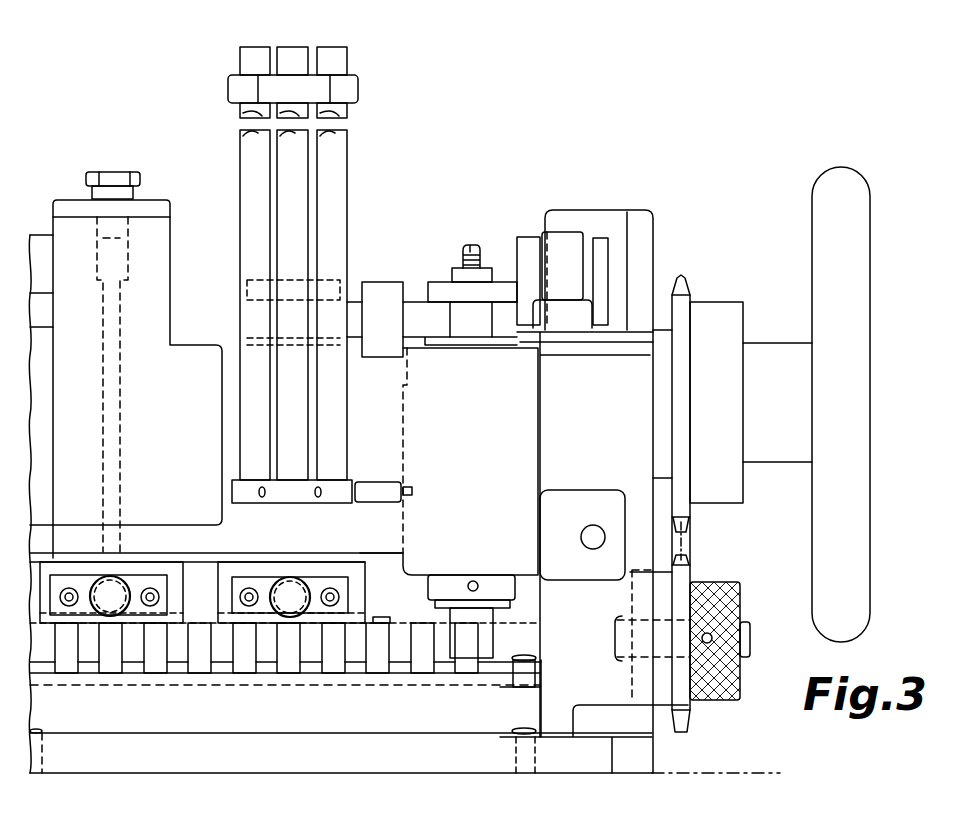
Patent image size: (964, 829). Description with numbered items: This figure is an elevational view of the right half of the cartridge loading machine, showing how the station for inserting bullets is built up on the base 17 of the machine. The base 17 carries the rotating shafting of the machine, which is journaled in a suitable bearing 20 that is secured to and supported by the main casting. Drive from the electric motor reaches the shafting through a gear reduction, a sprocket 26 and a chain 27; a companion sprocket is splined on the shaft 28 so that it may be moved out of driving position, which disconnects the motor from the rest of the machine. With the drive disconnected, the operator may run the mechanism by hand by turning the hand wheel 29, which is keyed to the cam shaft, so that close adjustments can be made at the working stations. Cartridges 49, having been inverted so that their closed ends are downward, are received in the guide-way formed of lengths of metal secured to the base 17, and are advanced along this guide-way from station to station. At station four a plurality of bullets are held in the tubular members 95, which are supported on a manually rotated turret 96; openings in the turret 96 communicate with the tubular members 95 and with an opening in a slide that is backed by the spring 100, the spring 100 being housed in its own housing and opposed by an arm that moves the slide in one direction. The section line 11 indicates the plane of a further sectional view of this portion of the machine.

The section line 11 is at (171, 776).
The base 17 is at (375, 762).
The bearing 20 is at (585, 210).
The sprocket 26 is at (685, 276).
The chain 27 is at (690, 540).
The shaft 28 is at (752, 640).
The hand wheel 29 is at (862, 175).
The cartridges 49 is at (382, 645).
The tubular members 95 is at (350, 62).
The turret 96 is at (250, 520).
The spring 100 is at (295, 588).